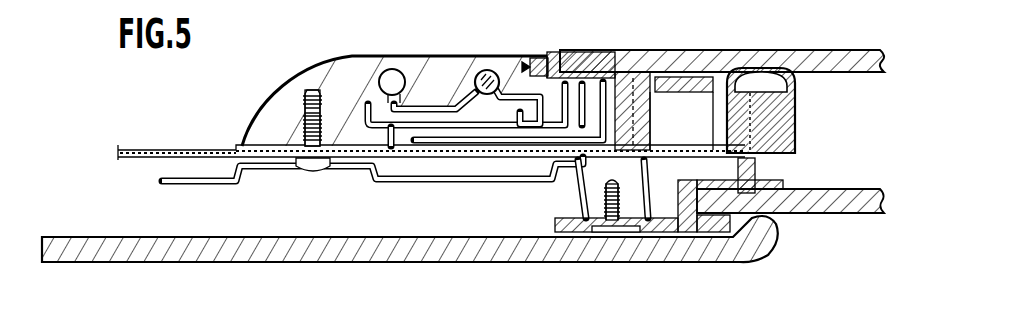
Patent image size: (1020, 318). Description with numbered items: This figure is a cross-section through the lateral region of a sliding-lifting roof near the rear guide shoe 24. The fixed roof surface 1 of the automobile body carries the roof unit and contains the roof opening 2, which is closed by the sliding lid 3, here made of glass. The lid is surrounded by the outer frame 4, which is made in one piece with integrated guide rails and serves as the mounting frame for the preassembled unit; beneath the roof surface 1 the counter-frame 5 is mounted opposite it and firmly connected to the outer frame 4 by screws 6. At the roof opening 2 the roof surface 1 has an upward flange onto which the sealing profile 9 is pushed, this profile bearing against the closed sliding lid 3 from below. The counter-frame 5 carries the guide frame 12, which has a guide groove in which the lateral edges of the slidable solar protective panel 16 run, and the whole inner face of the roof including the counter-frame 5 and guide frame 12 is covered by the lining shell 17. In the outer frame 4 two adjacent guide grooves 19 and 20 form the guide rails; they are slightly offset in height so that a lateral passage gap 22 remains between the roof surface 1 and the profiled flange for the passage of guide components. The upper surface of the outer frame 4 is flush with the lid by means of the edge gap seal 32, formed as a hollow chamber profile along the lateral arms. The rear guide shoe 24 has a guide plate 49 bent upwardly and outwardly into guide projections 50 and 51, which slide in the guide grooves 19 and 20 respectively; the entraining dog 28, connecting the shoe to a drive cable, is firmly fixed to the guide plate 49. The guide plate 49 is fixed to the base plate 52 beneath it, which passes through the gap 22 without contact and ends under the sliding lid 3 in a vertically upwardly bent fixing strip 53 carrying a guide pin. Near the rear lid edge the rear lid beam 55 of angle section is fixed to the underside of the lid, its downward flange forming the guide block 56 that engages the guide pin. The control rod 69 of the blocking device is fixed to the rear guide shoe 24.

The fixed roof surface 1 is at (156, 150).
The roof opening 2 is at (865, 121).
The sliding lid 3 is at (827, 44).
The outer frame 4 is at (300, 60).
The counter-frame 5 is at (167, 190).
The screws 6 is at (311, 170).
The sealing profile 9 is at (795, 138).
The guide frame 12 is at (583, 220).
The solar protective panel 16 is at (852, 214).
The lining shell 17 is at (365, 258).
The guide groove 19 is at (376, 95).
The guide groove 20 is at (522, 96).
The lateral passage gap 22 is at (568, 104).
The rear guide shoe 24 is at (411, 102).
The entraining dog 28 is at (441, 108).
The edge gap seal 32 is at (542, 52).
The guide plate 49 is at (447, 122).
The guide projection 50 is at (372, 150).
The guide projection 51 is at (528, 108).
The base plate 52 is at (470, 137).
The fixing strip 53 is at (605, 58).
The rear lid beam 55 is at (692, 88).
The guide block 56 is at (646, 120).
The control rod 69 is at (600, 70).